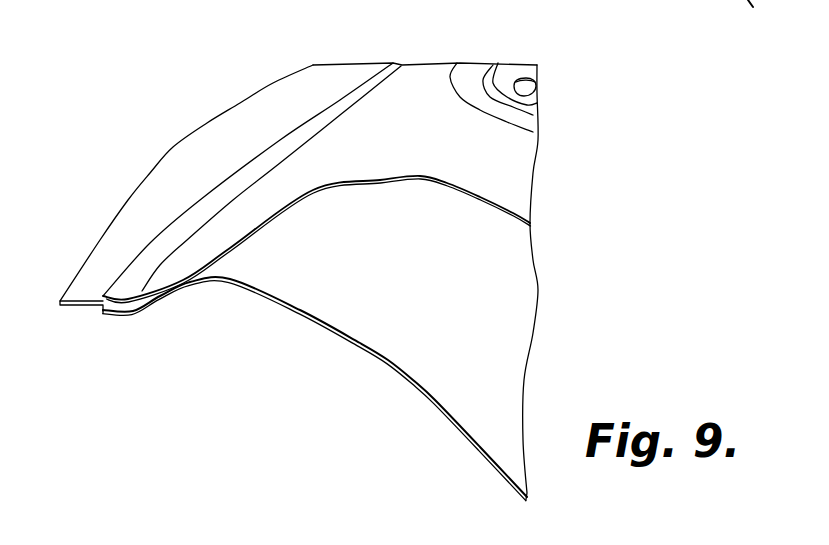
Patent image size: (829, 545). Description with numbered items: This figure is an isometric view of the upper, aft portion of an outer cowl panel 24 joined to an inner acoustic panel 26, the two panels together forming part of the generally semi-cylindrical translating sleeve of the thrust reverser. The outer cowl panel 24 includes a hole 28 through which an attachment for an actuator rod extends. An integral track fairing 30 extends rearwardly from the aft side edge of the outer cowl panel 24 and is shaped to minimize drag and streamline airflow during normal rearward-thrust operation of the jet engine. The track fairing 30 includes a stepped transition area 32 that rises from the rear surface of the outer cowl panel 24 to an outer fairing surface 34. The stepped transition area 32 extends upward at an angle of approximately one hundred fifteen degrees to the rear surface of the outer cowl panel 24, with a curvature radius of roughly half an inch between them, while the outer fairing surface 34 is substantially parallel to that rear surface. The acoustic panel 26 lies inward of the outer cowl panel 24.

The track fairing 30 is at (119, 147).
The outer fairing surface 34 is at (212, 125).
The stepped transition area 32 is at (322, 122).
The hole 28 is at (522, 92).
The outer cowl panel 24 is at (518, 180).
The acoustic panel 26 is at (505, 343).